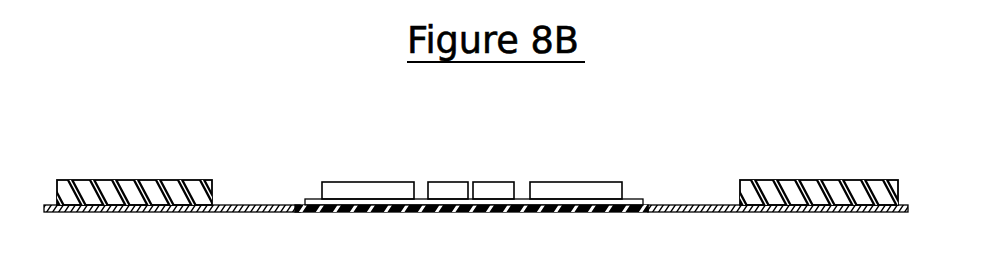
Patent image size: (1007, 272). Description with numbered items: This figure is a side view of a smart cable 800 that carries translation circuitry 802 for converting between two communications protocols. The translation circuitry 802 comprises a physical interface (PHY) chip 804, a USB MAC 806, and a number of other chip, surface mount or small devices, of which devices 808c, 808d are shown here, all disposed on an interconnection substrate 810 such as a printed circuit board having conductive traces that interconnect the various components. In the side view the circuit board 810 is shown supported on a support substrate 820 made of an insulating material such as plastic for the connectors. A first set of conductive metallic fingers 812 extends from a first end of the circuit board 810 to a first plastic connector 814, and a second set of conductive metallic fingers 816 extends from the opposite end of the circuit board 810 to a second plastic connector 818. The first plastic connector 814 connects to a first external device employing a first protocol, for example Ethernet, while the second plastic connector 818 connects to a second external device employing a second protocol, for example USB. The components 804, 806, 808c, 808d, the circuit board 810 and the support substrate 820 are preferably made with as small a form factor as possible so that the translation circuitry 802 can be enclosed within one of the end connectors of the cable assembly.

The cable 800 is at (180, 108).
The translation circuitry 802 is at (480, 156).
The physical interface (PHY) chip 804 is at (372, 181).
The USB MAC 806 is at (584, 181).
The surface mount or small device 808c is at (452, 181).
The surface mount or small device 808d is at (497, 181).
The interconnection substrate 810 is at (312, 197).
The first set of conductive fingers 812 is at (262, 216).
The first plastic connector 814 is at (119, 180).
The second set of conductive fingers 816 is at (700, 213).
The second plastic connector 818 is at (806, 180).
The support substrate 820 is at (550, 212).